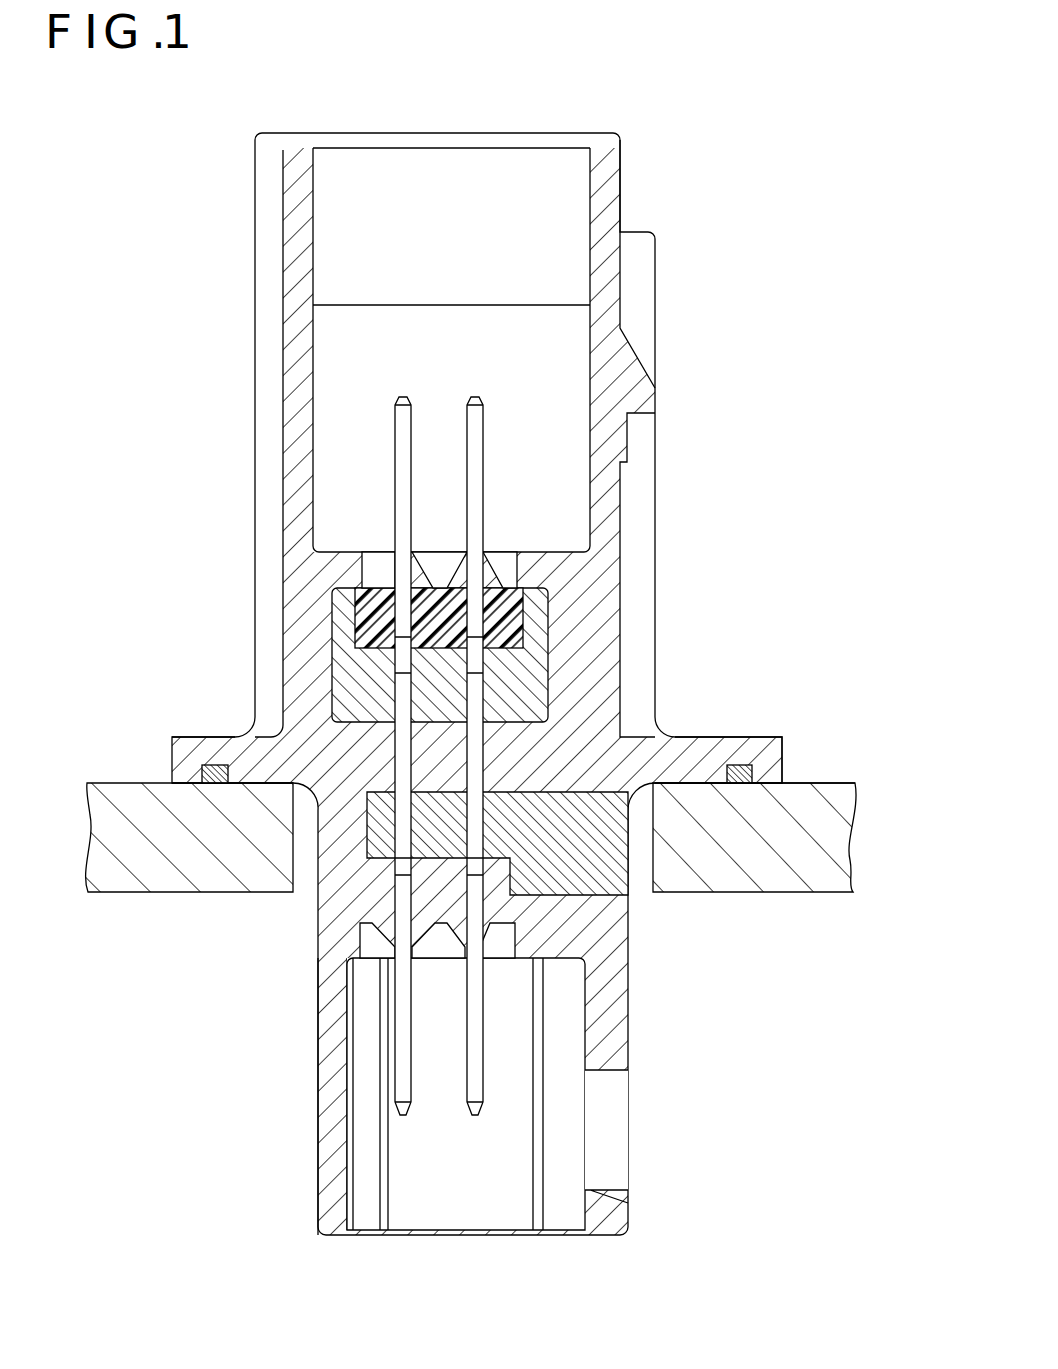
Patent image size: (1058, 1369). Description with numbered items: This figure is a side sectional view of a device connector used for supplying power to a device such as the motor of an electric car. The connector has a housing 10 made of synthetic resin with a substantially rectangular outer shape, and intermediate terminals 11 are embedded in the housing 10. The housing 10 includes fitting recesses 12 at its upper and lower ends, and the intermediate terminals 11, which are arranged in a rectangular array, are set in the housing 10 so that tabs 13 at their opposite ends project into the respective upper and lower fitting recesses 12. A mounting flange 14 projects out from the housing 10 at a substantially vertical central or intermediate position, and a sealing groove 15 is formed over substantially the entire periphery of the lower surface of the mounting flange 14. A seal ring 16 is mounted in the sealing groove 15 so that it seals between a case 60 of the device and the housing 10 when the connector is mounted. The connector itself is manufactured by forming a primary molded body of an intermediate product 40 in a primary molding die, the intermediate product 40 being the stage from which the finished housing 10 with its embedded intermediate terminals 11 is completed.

The housing 10 is at (670, 280).
The intermediate terminals 11 is at (475, 689).
The fitting recesses 12 is at (320, 228).
The tabs 13 is at (475, 398).
The mounting flange 14 is at (208, 745).
The sealing groove 15 is at (750, 775).
The seal ring 16 is at (735, 787).
The intermediate product 40 is at (560, 854).
The case 60 is at (725, 853).